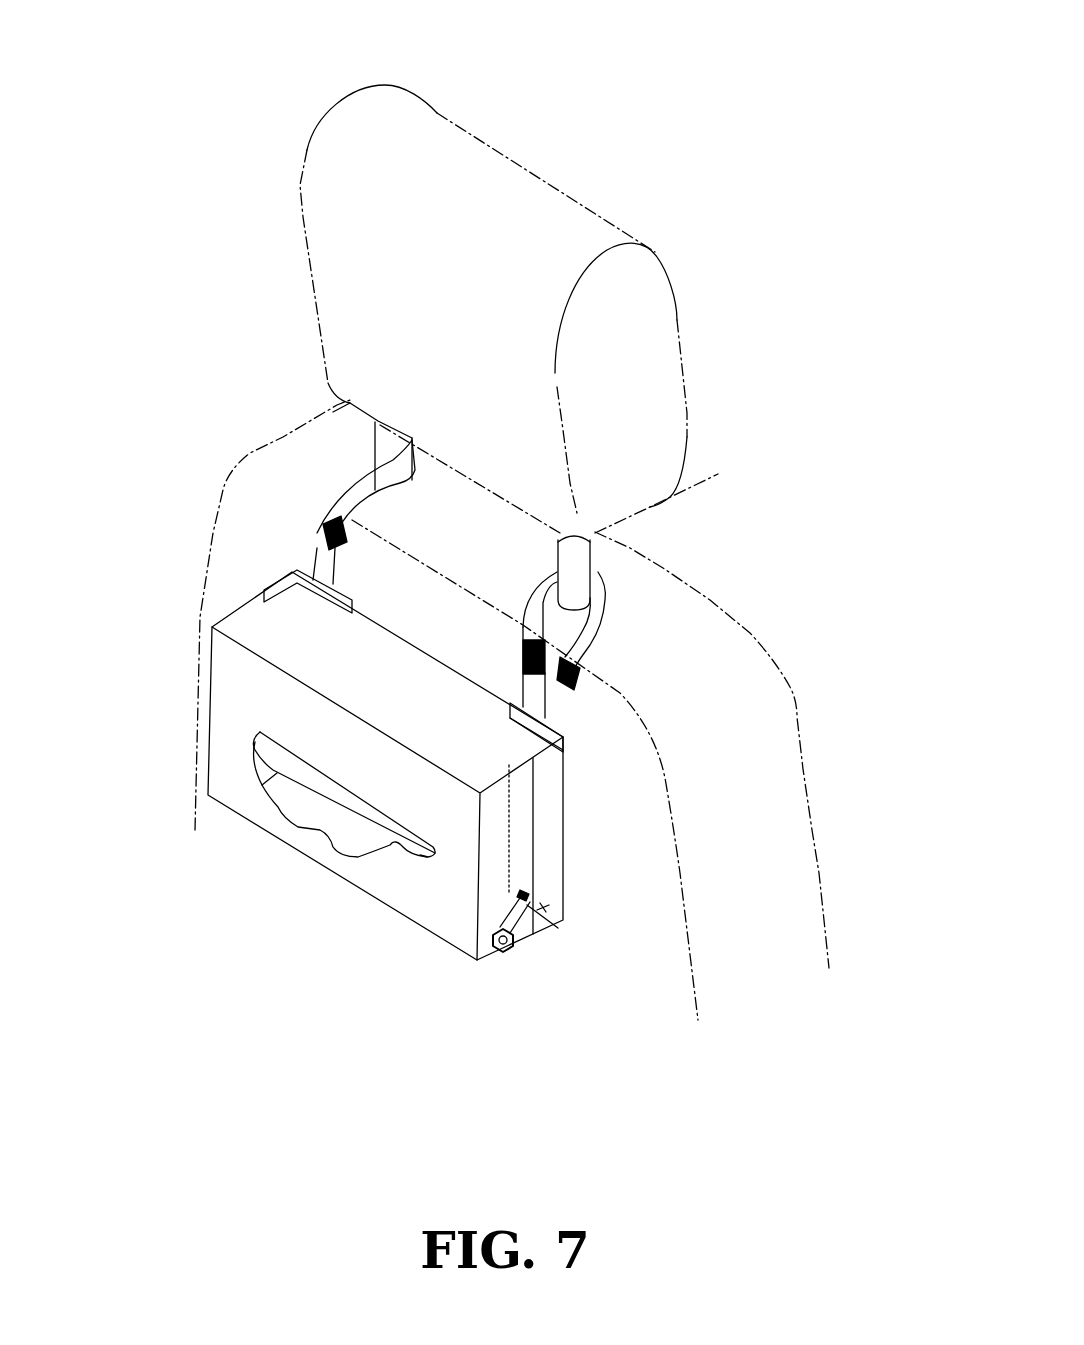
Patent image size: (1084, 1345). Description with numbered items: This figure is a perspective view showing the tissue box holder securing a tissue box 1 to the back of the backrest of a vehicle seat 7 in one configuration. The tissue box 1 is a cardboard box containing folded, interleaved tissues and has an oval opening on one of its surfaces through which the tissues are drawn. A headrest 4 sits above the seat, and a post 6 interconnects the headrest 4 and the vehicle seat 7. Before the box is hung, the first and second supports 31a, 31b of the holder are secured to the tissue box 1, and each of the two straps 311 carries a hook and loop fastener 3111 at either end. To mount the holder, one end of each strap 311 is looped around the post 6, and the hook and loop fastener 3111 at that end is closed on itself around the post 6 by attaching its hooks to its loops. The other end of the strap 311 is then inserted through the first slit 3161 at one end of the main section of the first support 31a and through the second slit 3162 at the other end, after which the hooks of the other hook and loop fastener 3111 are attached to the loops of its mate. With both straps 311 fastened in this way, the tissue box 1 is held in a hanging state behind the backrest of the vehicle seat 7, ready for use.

The headrest 4 is at (422, 250).
The vehicle seat 7 is at (790, 700).
The post 6 is at (600, 538).
The strap 311 is at (355, 473).
The hook and loop fastener 3111 is at (333, 518).
The tissue box 1 is at (272, 660).
The second support 31b is at (290, 570).
The first support 31a is at (560, 758).
The first slit 3161 is at (525, 720).
The second slit 3162 is at (550, 895).